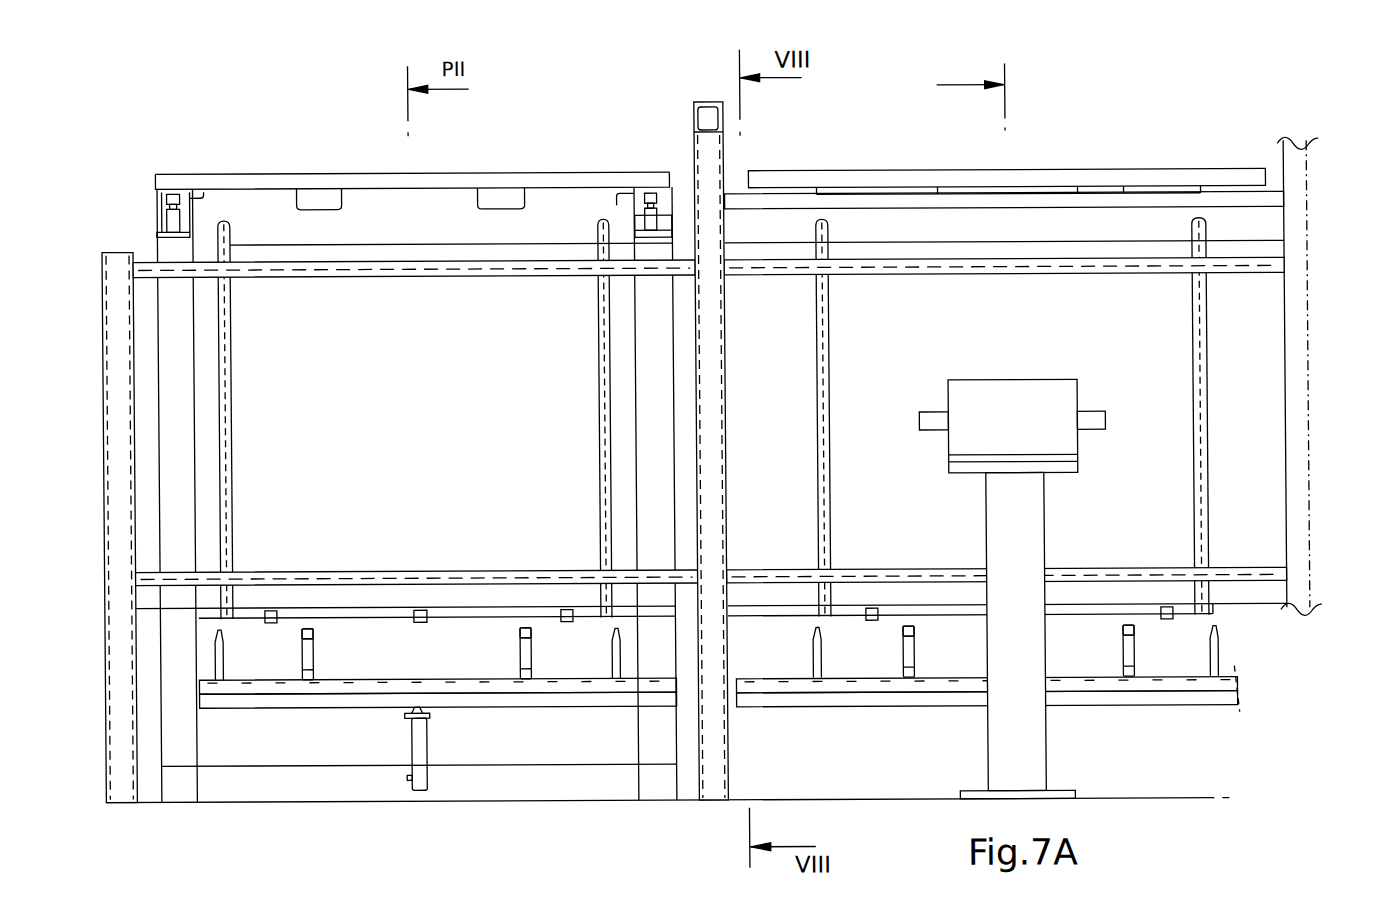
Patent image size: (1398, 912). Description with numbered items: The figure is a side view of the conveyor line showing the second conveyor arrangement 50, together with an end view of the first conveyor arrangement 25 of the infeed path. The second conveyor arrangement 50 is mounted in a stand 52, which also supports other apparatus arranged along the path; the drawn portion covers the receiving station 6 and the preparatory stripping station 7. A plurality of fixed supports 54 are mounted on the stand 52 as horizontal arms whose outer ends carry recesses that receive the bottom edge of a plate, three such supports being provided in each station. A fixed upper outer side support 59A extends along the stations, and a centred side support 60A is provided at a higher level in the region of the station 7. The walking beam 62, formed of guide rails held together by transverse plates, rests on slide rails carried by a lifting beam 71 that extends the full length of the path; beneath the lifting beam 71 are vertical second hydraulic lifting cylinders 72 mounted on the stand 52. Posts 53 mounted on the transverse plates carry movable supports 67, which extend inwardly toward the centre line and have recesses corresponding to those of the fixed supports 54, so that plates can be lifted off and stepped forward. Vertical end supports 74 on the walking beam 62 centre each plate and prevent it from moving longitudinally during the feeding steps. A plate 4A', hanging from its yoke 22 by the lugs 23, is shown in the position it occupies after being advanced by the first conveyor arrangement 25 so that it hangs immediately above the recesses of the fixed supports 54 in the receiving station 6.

The receiving station 6 is at (286, 161).
The preparatory stripping station 7 is at (1138, 156).
The yoke 22 is at (478, 171).
The lugs 23 is at (215, 173).
The conveyor arrangement 25 is at (145, 212).
The plate 4A' is at (451, 180).
The conveyor arrangement 50 is at (905, 716).
The stand 52 is at (108, 772).
The posts 53 is at (315, 652).
The supports 54 is at (272, 608).
The upper outer side support 59A is at (305, 277).
The centred side support 60A is at (1290, 194).
The walking beam 62 is at (433, 678).
The movable supports 67 is at (300, 629).
The lifting beam 71 is at (1198, 694).
The second hydraulic lifting cylinders 72 is at (421, 775).
The end supports 74 is at (811, 645).